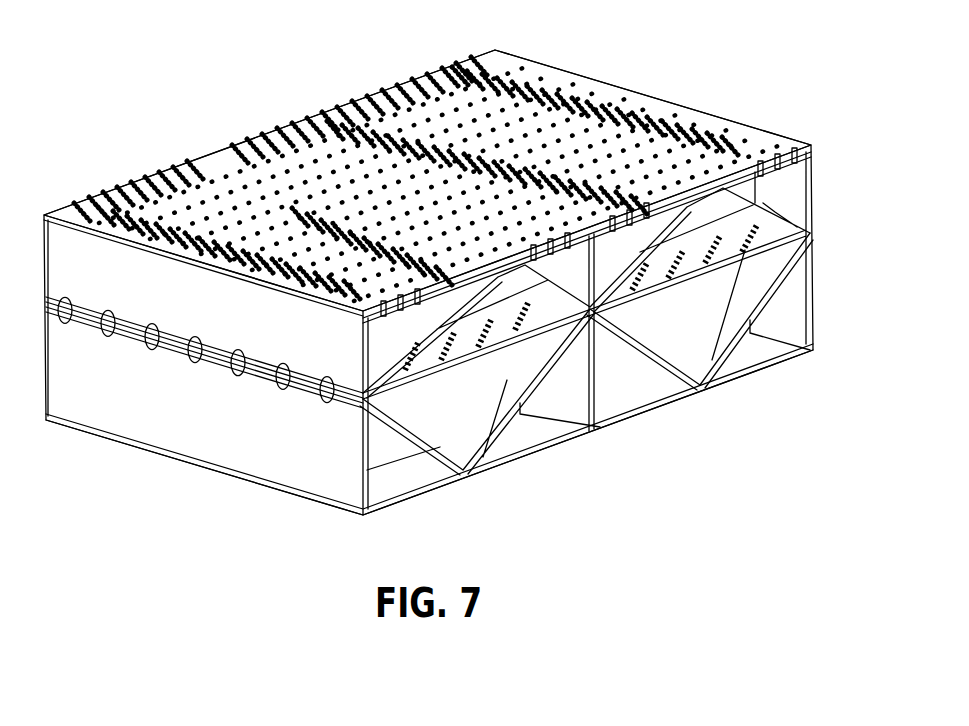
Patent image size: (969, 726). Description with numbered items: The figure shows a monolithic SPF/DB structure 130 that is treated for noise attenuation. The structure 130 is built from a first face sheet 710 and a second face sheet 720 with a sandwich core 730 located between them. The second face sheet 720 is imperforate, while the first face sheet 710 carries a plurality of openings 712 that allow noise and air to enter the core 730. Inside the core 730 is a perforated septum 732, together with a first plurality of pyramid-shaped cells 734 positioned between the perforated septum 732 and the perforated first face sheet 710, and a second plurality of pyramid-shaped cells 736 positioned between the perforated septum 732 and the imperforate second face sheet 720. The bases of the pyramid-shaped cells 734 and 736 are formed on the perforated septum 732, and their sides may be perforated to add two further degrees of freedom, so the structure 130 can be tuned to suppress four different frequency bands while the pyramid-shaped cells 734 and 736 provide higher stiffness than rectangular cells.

The monolithic SPF/DB structure 130 is at (211, 49).
The first face sheet 710 is at (427, 174).
The openings 712 is at (548, 80).
The second face sheet 720 is at (630, 417).
The sandwich core 730 is at (456, 328).
The perforated septum 732 is at (434, 372).
The first plurality of pyramid-shaped cells 734 is at (402, 330).
The second plurality of pyramid-shaped cells 736 is at (503, 430).